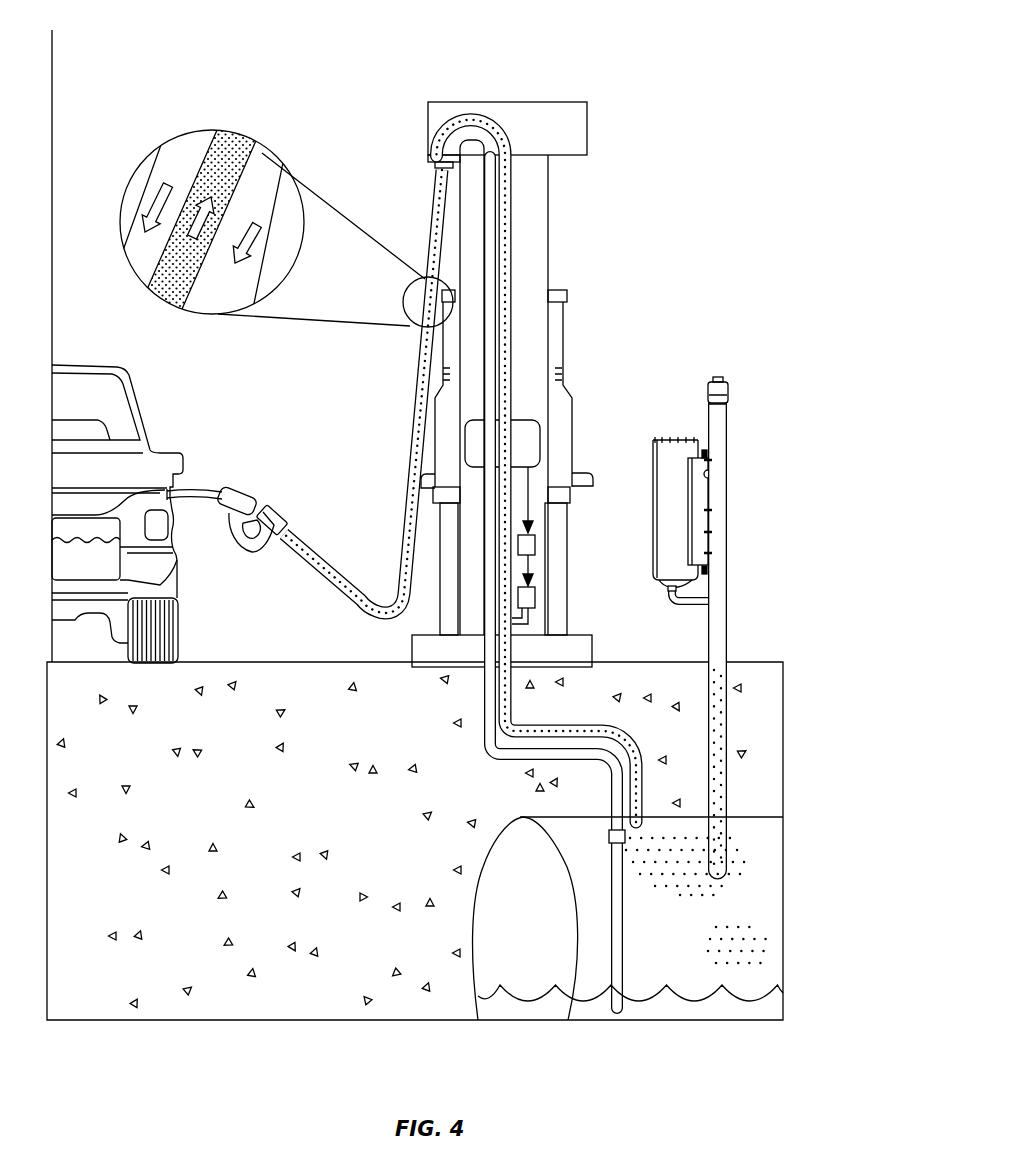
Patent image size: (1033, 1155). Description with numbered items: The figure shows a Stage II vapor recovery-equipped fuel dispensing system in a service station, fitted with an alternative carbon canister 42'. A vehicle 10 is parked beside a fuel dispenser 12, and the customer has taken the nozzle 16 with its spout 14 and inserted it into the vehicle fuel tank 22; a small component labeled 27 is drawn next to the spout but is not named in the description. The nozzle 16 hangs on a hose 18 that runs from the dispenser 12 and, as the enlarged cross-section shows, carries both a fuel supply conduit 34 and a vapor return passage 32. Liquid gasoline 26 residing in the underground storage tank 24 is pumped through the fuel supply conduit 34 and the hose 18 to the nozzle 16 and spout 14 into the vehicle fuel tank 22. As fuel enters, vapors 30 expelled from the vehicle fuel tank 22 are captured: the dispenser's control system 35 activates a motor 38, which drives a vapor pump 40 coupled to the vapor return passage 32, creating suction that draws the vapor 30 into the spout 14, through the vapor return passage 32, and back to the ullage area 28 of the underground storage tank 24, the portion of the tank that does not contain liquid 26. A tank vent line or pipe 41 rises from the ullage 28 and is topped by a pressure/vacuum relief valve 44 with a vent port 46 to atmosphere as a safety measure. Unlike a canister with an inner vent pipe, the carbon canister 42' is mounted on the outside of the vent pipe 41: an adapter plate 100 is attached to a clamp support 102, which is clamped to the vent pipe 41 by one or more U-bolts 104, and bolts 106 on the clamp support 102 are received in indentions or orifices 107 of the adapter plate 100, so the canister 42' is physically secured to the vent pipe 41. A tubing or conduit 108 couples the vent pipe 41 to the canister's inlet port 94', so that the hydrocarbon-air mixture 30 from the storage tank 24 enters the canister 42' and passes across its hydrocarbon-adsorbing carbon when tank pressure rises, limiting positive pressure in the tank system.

The vehicle 10 is at (105, 406).
The fuel dispenser 12 is at (530, 78).
The spout 14 is at (207, 492).
The nozzle 16 is at (250, 500).
The hose 18 is at (137, 170).
The vehicle fuel tank 22 is at (97, 566).
The underground storage tank 24 is at (710, 928).
The liquid gasoline 26 is at (130, 242).
The filler neck 27 is at (207, 507).
The ullage area 28 is at (757, 880).
The vapors 30 is at (713, 720).
The vapor return passage 32 is at (262, 165).
The fuel supply conduit 34 is at (190, 150).
The control system 35 is at (532, 420).
The motor 38 is at (534, 535).
The vapor pump 40 is at (534, 587).
The tank vent line or pipe 41 is at (727, 632).
The alternative carbon canister 42' is at (655, 512).
The pressure/vacuum relief valve 44 is at (730, 387).
The vent port 46 is at (720, 378).
The inlet port 94' is at (653, 612).
The adapter plate 100 is at (700, 498).
The clamp support 102 is at (707, 452).
The U-bolts 104 is at (710, 470).
The bolts 106 is at (707, 510).
The indentions or orifices 107 is at (708, 473).
The tubing or conduit 108 is at (690, 606).